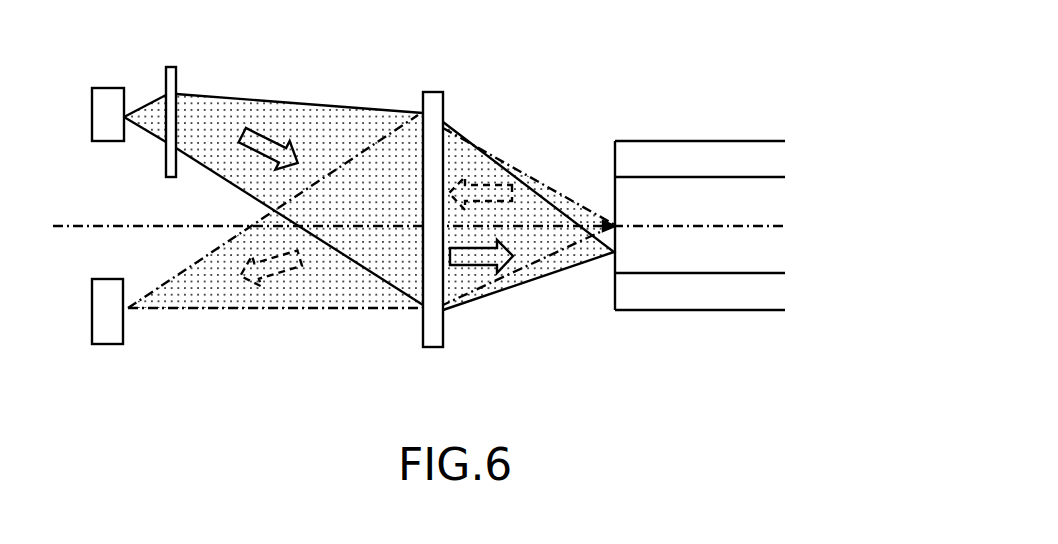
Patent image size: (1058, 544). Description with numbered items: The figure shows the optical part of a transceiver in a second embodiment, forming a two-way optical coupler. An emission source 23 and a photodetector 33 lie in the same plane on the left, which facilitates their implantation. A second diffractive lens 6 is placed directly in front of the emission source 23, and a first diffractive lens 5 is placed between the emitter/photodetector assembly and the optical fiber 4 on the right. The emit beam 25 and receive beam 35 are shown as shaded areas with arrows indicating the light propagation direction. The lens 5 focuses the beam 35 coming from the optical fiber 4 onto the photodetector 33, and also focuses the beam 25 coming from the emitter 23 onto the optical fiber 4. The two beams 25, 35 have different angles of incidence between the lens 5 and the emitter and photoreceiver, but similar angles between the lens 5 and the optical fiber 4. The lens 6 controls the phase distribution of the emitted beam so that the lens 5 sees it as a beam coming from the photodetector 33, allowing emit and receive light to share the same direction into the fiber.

The optical fiber 4 is at (711, 122).
The first diffractive lens 5 is at (437, 92).
The second diffractive lens 6 is at (172, 67).
The emission source 23 is at (105, 105).
The emit light beam 25 is at (333, 130).
The photodetector 33 is at (110, 330).
The receive light beam 35 is at (303, 292).